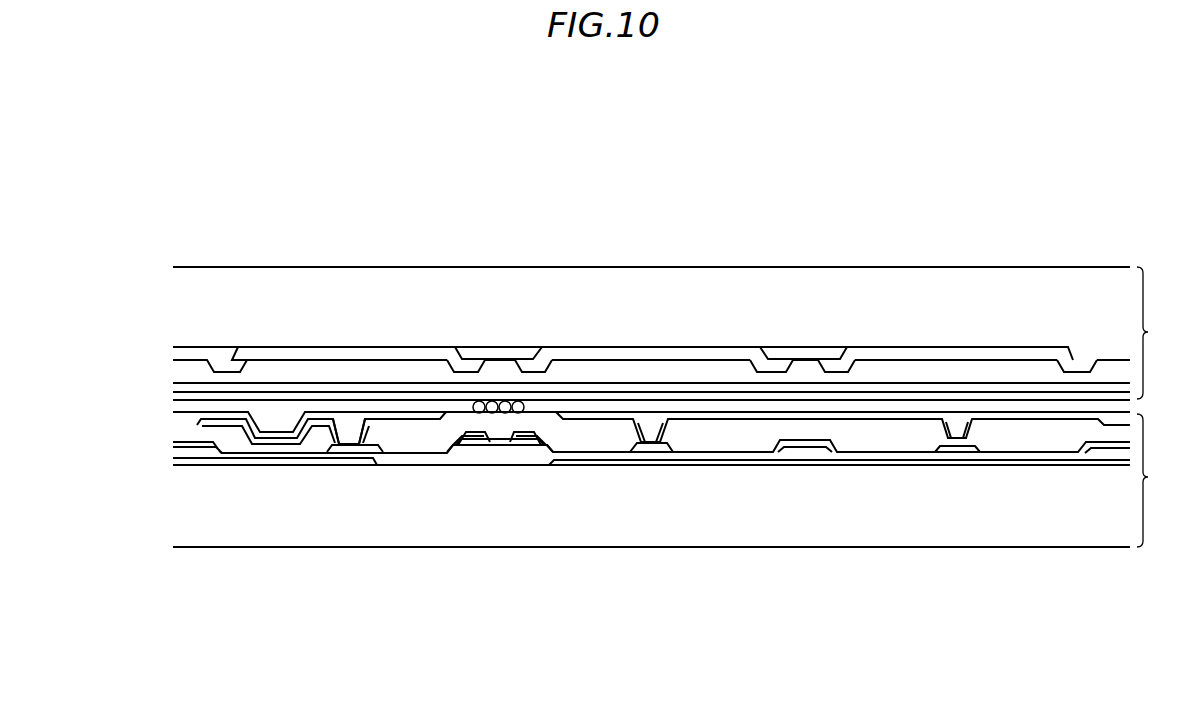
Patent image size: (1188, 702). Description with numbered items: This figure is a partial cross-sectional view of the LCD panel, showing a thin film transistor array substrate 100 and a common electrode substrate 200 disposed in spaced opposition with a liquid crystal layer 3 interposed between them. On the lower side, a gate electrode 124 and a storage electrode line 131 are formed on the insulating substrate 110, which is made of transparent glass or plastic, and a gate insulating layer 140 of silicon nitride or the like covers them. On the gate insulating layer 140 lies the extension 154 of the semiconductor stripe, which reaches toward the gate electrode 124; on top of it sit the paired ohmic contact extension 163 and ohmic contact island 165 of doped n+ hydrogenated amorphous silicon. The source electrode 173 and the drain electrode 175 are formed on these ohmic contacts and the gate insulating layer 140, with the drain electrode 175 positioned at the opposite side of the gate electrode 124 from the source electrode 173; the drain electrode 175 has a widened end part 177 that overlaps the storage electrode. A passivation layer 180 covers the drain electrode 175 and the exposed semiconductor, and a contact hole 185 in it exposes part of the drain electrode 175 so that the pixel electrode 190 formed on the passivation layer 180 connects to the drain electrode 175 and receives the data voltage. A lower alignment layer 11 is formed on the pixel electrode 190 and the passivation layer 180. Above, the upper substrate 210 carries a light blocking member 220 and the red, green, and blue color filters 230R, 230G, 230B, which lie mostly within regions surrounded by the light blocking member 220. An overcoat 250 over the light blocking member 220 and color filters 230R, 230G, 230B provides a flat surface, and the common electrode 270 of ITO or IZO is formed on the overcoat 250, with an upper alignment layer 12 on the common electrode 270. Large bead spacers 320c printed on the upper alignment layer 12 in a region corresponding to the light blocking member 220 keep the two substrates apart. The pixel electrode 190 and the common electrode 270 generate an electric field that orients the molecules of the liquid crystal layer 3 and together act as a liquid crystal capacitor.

The liquid crystal layer 3 is at (1112, 406).
The lower alignment layer 11 is at (200, 405).
The upper alignment layer 12 is at (188, 403).
The thin film transistor array substrate 100 is at (1160, 480).
The insulating substrate 110 is at (388, 527).
The gate electrode 124 is at (513, 450).
The storage electrode line 131 is at (800, 450).
The gate insulating layer 140 is at (733, 457).
The extension of semiconductor stripe 154 is at (498, 442).
The extension of ohmic contact stripe 163 is at (528, 440).
The ohmic contact island 165 is at (460, 455).
The source electrode 173 is at (545, 435).
The drain electrode 175 is at (477, 440).
The widened end part of drain electrode 177 is at (343, 447).
The passivation layer 180 is at (890, 441).
The contact hole 185 is at (332, 438).
The pixel electrode 190 is at (1027, 423).
The common electrode substrate 200 is at (1160, 333).
The upper substrate 210 is at (182, 307).
The light blocking member 220 is at (493, 352).
The blue color filter 230B is at (300, 355).
The green color filter 230G is at (650, 355).
The red color filter 230R is at (940, 355).
The overcoat 250 is at (182, 370).
The common electrode 270 is at (190, 388).
The large bead spacer 320c is at (505, 401).